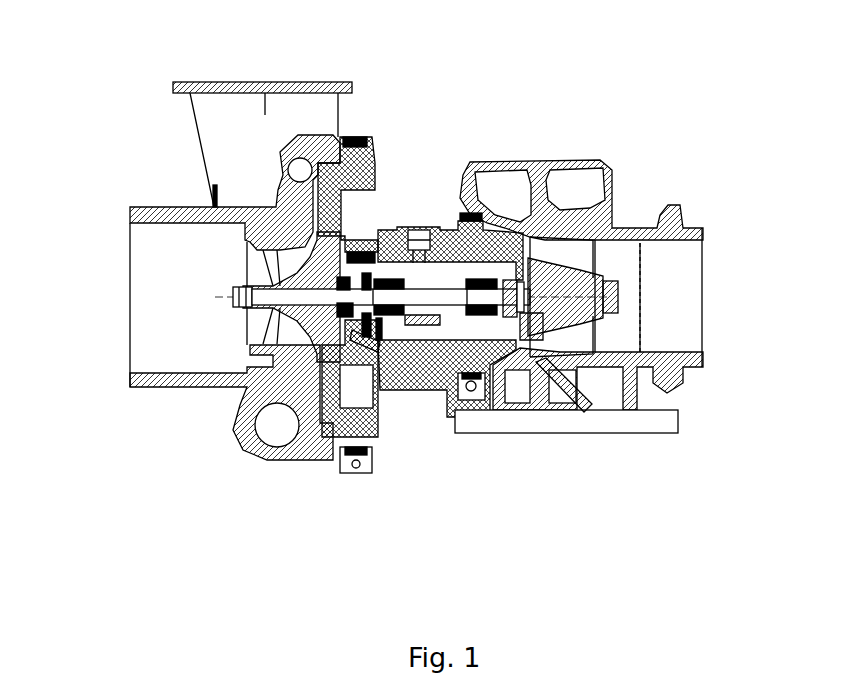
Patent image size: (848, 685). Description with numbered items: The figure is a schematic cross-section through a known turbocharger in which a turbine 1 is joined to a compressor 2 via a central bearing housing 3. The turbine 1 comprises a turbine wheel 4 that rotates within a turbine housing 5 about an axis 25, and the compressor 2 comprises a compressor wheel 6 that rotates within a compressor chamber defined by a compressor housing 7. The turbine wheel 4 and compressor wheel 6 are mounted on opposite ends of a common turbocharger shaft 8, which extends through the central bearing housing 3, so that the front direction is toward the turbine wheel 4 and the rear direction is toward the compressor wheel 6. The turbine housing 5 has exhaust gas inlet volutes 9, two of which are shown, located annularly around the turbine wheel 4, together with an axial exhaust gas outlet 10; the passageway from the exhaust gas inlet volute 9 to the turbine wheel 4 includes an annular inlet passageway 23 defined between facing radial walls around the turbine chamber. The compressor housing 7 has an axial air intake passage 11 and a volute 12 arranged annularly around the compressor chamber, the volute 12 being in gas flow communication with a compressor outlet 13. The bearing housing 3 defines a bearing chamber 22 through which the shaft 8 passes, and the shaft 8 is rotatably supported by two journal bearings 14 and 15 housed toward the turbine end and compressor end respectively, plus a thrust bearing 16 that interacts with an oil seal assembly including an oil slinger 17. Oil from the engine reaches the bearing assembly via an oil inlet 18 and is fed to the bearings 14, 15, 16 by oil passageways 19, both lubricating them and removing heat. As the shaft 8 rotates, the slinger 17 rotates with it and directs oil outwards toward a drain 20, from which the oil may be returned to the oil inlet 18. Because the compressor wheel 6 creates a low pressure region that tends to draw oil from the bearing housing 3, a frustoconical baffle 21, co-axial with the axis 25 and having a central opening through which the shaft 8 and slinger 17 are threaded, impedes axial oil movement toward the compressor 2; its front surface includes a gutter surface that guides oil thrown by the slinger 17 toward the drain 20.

The turbine 1 is at (560, 127).
The compressor 2 is at (165, 427).
The central bearing housing 3 is at (400, 200).
The turbine wheel 4 is at (550, 315).
The turbine housing 5 is at (653, 365).
The compressor wheel 6 is at (265, 283).
The compressor housing 7 is at (250, 208).
The turbocharger shaft 8 is at (453, 310).
The exhaust gas inlet volute 9 is at (583, 177).
The axial exhaust gas outlet 10 is at (630, 265).
The axial air intake passage 11 is at (155, 250).
The volute 12 is at (298, 170).
The compressor outlet 13 is at (205, 112).
The journal bearing 14 is at (497, 343).
The journal bearing 15 is at (397, 310).
The thrust bearing 16 is at (365, 247).
The oil slinger 17 is at (352, 318).
The oil inlet 18 is at (430, 232).
The oil passageways 19 is at (460, 288).
The drain 20 is at (383, 345).
The baffle 21 is at (381, 350).
The bearing chamber 22 is at (432, 363).
The annular inlet passageway 23 is at (543, 367).
The axis 25 is at (620, 297).